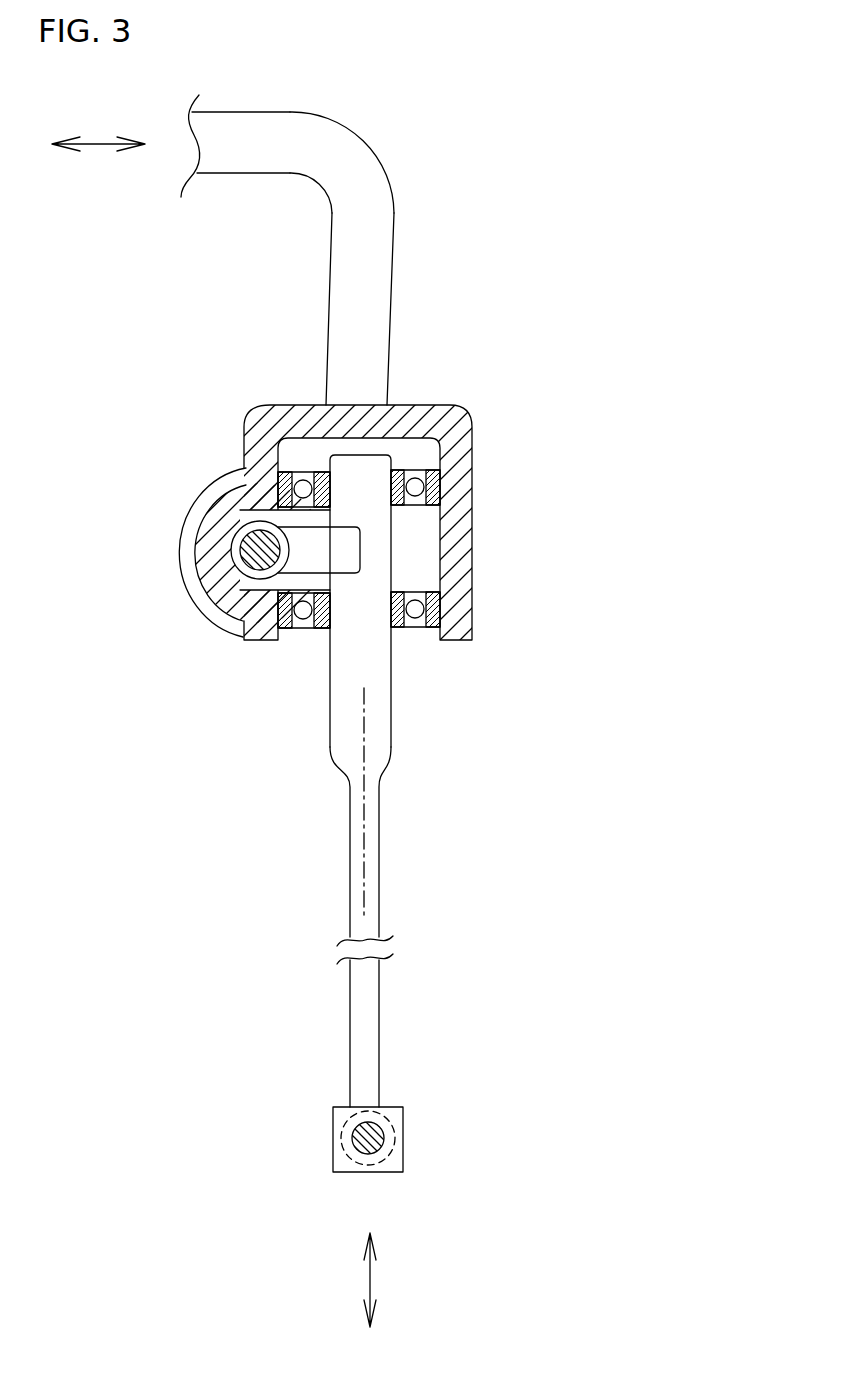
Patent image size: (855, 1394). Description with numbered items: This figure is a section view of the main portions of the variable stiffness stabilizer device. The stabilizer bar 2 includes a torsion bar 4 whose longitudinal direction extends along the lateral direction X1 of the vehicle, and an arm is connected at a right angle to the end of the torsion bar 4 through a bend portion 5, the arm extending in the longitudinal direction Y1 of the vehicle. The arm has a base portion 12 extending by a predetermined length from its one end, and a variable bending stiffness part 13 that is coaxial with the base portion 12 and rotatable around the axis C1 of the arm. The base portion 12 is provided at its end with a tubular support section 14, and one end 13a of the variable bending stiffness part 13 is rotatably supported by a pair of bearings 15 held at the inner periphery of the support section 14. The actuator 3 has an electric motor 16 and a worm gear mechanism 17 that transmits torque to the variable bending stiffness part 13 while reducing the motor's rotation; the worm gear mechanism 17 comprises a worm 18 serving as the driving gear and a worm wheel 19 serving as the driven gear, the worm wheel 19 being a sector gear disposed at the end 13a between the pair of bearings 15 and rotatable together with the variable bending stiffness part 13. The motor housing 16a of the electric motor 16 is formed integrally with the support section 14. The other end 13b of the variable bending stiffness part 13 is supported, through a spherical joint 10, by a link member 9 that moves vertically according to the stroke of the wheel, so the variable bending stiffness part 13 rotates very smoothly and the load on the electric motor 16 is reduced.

The stabilizer bar 2 is at (331, 224).
The torsion bar 4 is at (235, 125).
The bend portion 5 is at (362, 148).
The base portion 12 is at (380, 350).
The actuator 3 is at (213, 446).
The support section 14 is at (462, 527).
The bearings 15 is at (413, 487).
The electric motor 16 is at (204, 544).
The motor housing 16a is at (180, 553).
The worm gear mechanism 17 is at (226, 574).
The worm 18 is at (255, 575).
The worm wheel 19 is at (343, 567).
The variable bending stiffness part 13 is at (419, 911).
The one end of variable bending stiffness part 13a is at (388, 560).
The other end of variable bending stiffness part 13b is at (403, 1120).
The axis C1 is at (365, 891).
The spherical joint 10 is at (333, 1135).
The link member 9 is at (368, 1142).
The lateral direction X1 is at (93, 143).
The longitudinal direction Y1 is at (370, 1280).